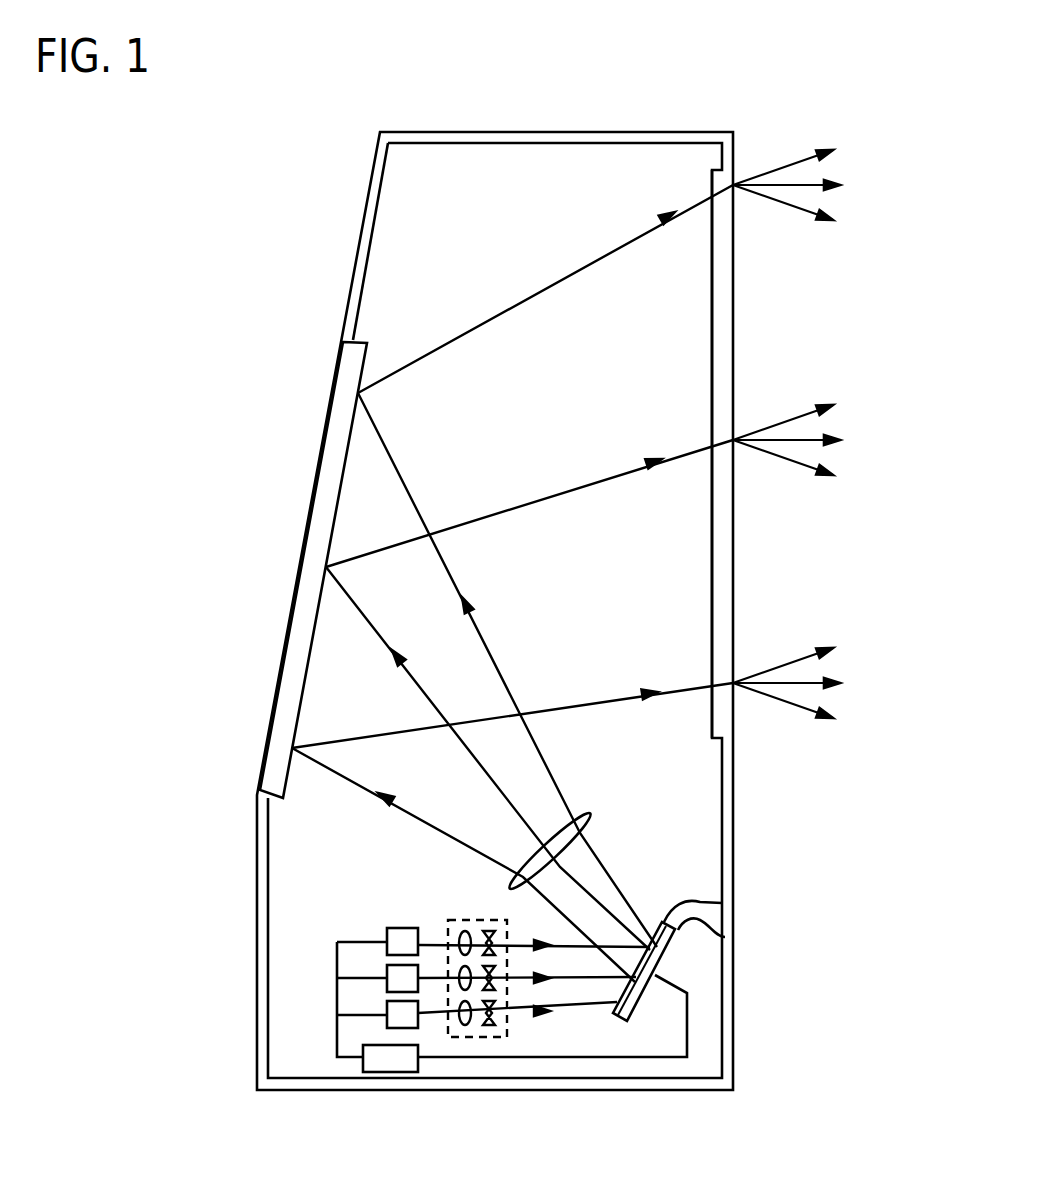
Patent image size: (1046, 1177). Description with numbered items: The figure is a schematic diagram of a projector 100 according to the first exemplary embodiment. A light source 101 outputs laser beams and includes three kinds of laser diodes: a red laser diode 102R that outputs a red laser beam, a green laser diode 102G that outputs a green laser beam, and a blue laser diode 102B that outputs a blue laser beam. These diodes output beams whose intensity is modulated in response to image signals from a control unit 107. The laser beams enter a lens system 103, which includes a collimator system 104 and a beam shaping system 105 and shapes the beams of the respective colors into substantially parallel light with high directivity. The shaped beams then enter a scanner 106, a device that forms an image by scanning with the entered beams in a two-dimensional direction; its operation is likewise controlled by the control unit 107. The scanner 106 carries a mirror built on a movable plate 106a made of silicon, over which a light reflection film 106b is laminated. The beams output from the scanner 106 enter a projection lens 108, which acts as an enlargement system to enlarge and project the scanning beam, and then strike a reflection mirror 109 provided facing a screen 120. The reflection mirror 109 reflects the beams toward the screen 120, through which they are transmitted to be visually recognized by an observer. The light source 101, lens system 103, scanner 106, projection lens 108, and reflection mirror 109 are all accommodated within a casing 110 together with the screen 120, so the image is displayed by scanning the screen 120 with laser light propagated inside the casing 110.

The projector 100 is at (562, 546).
The light source 101 is at (235, 965).
The red laser diode 102R is at (387, 932).
The green laser diode 102G is at (387, 968).
The blue laser diode 102B is at (387, 1005).
The lens system 103 is at (433, 1007).
The collimator system 104 is at (440, 915).
The beam shaping system 105 is at (487, 920).
The scanner 106 is at (623, 1004).
The movable plate 106a is at (640, 1022).
The light reflection film 106b is at (730, 902).
The control unit 107 is at (387, 1060).
The projection lens 108 is at (590, 823).
The reflection mirror 109 is at (332, 447).
The casing 110 is at (733, 1047).
The screen 120 is at (733, 173).